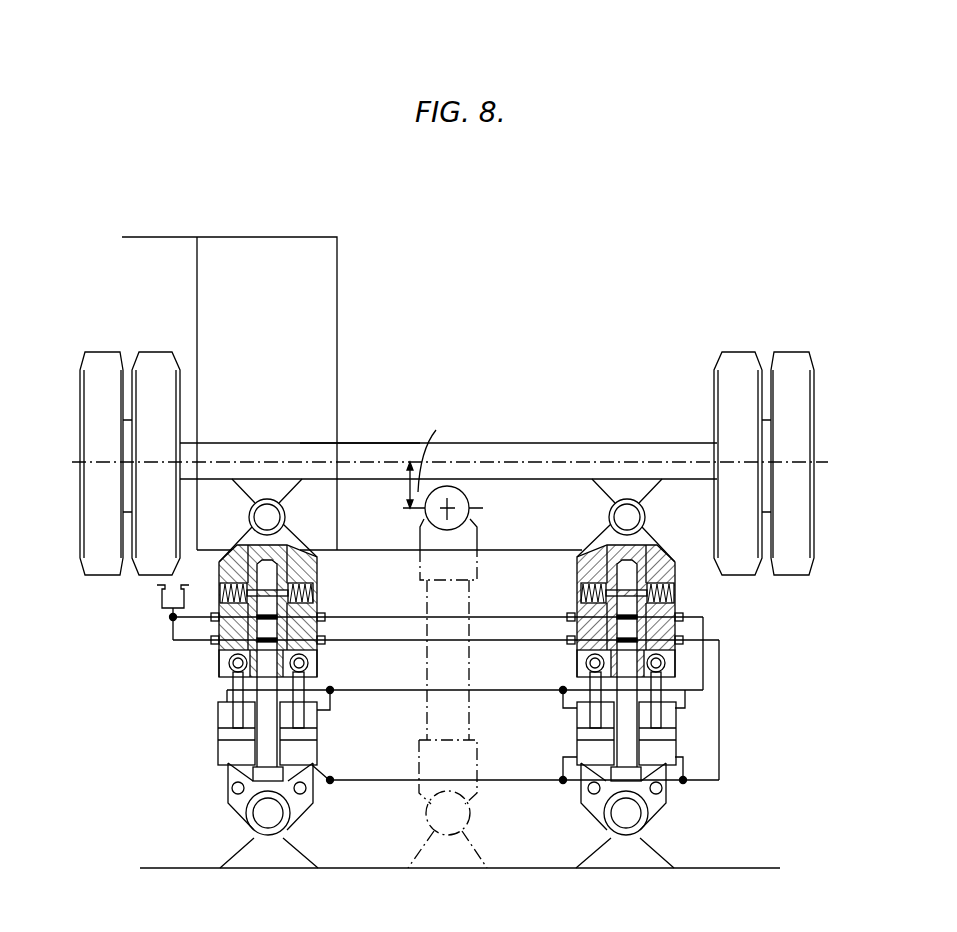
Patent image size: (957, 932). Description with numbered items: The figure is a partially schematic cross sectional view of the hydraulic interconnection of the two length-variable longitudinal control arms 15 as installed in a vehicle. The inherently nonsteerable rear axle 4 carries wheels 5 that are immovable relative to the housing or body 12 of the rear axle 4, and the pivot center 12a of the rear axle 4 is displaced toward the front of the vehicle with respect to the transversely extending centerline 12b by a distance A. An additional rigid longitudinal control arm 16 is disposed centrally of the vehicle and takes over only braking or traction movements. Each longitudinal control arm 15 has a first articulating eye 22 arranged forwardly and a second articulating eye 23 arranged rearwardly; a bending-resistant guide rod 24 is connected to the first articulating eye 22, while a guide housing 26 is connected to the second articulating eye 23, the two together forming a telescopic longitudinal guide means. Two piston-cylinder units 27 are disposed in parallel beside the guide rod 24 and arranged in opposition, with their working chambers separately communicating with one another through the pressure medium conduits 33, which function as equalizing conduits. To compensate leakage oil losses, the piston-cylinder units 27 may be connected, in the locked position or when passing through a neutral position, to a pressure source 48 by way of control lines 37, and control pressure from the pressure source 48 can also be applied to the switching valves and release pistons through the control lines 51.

The rear axle 4 is at (370, 444).
The wheels 5 is at (150, 352).
The body of the rear axle 12 is at (522, 443).
The pivot center 12a is at (452, 507).
The transversely extending centerline 12b is at (620, 462).
The longitudinal control arm 15 is at (219, 656).
The rigid longitudinal control arm 16 is at (470, 596).
The first articulating eye 22 is at (290, 824).
The second articulating eye 23 is at (287, 512).
The guide rod 24 is at (277, 688).
The guide housing 26 is at (318, 572).
The piston-cylinder units 27 is at (278, 734).
The pressure medium conduits 33 is at (372, 695).
The control lines 37 is at (362, 618).
The pressure source 48 is at (158, 600).
The control lines 51 is at (337, 403).